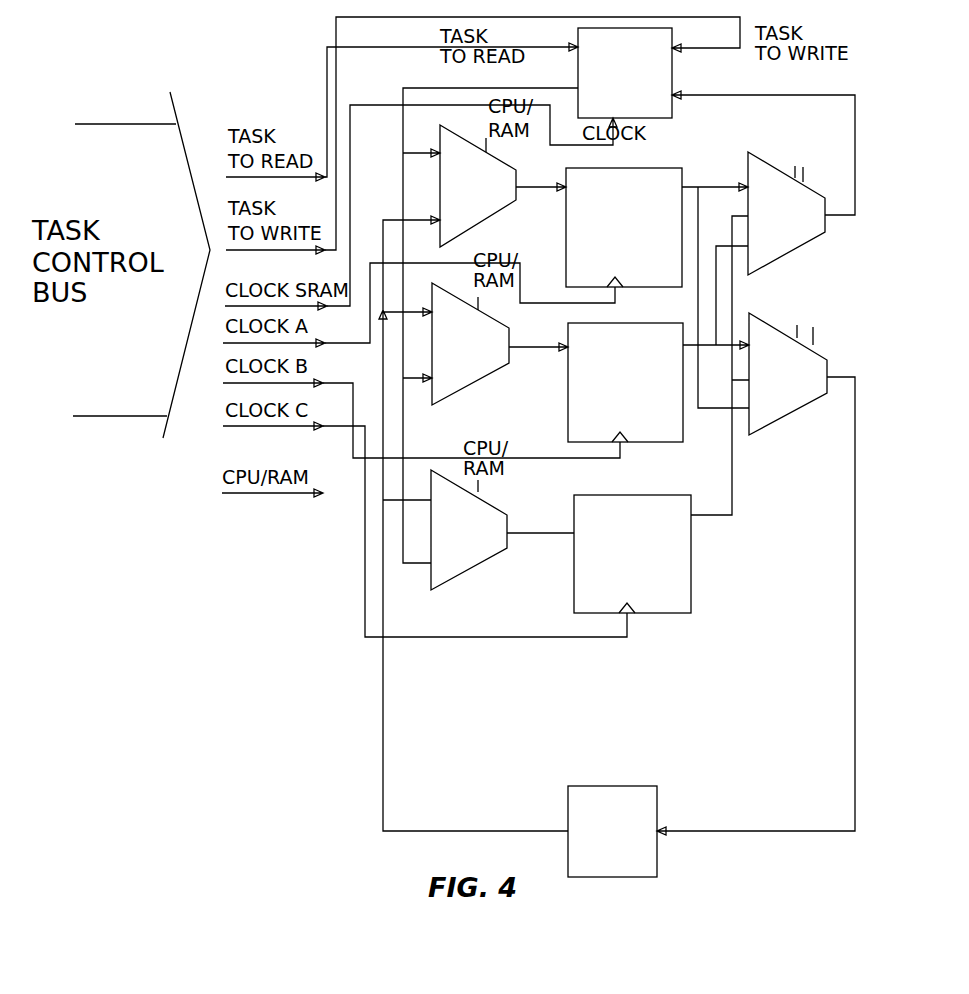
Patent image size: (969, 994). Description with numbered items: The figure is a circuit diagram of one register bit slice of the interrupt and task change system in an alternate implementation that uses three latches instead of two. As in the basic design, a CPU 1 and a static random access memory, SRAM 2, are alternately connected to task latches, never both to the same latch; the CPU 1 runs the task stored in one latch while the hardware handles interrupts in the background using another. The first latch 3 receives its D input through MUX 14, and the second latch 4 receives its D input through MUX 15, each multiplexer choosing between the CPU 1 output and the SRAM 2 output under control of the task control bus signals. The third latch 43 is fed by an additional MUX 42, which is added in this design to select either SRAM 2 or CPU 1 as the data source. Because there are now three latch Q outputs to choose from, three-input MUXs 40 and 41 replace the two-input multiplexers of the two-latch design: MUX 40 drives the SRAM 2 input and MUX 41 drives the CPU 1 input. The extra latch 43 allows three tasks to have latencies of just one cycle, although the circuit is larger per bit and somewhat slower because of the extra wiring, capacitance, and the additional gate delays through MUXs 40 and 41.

The CPU 1 is at (648, 853).
The static random access memory (SRAM) 2 is at (672, 118).
The latch 3 is at (566, 276).
The latch 4 is at (683, 428).
The MUX 14 is at (478, 218).
The MUX 15 is at (470, 378).
The 3-input MUX 40 is at (795, 240).
The 3-input MUX 41 is at (795, 405).
The MUX 42 is at (462, 562).
The latch 43 is at (686, 600).